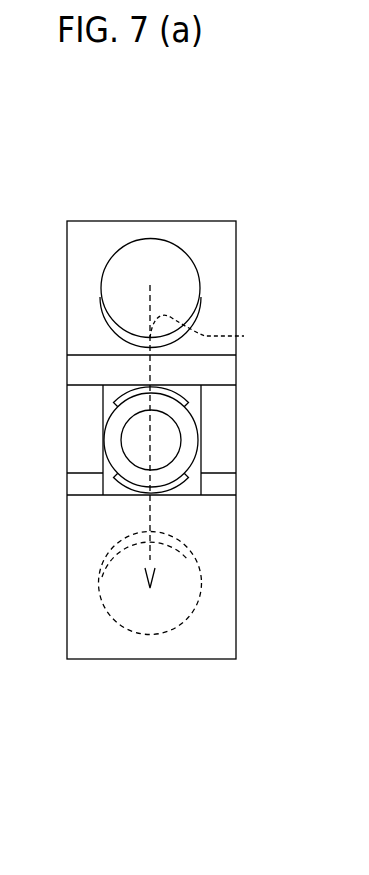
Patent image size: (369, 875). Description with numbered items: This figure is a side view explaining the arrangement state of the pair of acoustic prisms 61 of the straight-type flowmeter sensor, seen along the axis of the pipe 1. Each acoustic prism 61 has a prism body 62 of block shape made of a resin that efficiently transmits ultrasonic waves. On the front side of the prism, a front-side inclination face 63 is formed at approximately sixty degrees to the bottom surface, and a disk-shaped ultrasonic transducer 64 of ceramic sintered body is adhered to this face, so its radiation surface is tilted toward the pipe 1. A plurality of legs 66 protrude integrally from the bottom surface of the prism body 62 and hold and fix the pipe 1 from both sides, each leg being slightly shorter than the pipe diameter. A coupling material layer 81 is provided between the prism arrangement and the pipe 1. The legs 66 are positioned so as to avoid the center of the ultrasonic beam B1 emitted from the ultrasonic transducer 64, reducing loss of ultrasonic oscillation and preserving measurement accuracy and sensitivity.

The acoustic prism 61 is at (190, 221).
The prism body 62 is at (237, 284).
The front-side inclination face 63 is at (90, 334).
The ultrasonic transducer 64 is at (127, 268).
The leg 66 is at (85, 430).
The coupling material layer 81 is at (128, 393).
The pipe 1 is at (198, 469).
The ultrasonic beam B1 is at (211, 333).